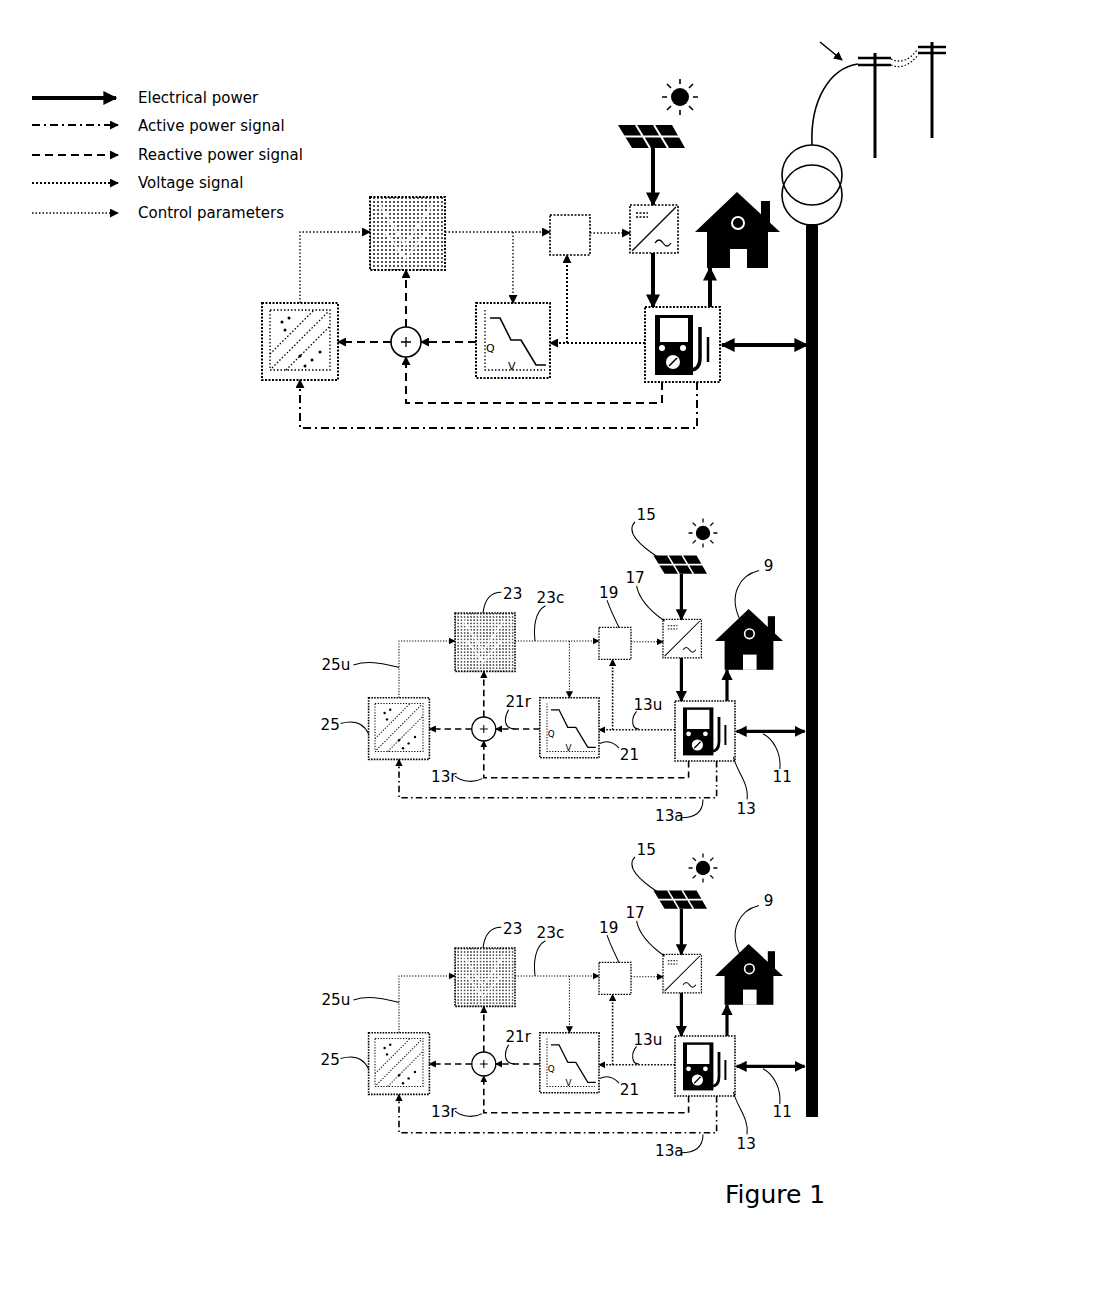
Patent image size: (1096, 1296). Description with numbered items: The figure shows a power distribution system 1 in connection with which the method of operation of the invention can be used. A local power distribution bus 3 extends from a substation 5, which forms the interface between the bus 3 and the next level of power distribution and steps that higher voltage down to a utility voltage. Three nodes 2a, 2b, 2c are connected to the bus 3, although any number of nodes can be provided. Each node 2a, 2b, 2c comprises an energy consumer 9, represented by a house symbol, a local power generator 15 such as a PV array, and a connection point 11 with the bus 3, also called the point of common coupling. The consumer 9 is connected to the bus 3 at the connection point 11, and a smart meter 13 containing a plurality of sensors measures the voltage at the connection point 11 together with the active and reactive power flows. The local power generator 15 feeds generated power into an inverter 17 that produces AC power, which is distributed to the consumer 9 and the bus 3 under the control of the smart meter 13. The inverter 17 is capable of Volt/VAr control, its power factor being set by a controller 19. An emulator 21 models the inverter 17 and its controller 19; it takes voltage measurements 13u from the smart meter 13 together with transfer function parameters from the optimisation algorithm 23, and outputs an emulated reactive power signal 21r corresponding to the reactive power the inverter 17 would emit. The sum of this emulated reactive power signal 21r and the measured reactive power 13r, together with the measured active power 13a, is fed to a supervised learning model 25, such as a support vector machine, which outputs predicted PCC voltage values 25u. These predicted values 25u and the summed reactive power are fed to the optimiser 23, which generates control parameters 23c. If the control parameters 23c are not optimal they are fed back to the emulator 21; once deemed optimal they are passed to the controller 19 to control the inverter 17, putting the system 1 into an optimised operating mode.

The power distribution system 1 is at (448, 108).
The node 2a is at (224, 388).
The node 2b is at (276, 598).
The node 2c is at (311, 904).
The local power distribution bus 3 is at (819, 735).
The substation 5 is at (838, 216).
The energy consumer 9 is at (737, 197).
The connection point 11 is at (764, 378).
The smart meter 13 is at (695, 379).
The measured active power 13a is at (498, 420).
The measured reactive power 13r is at (501, 384).
The voltage measurements 13u is at (597, 299).
The local power generator 15 is at (644, 105).
The inverter 17 is at (630, 197).
The controller 19 is at (570, 207).
The emulator 21 is at (538, 344).
The emulated reactive power signal 21r is at (448, 319).
The optimiser 23 is at (412, 216).
The control parameters 23c is at (497, 235).
The supervised learning model 25 is at (270, 341).
The predicted PCC voltage values 25u is at (286, 267).